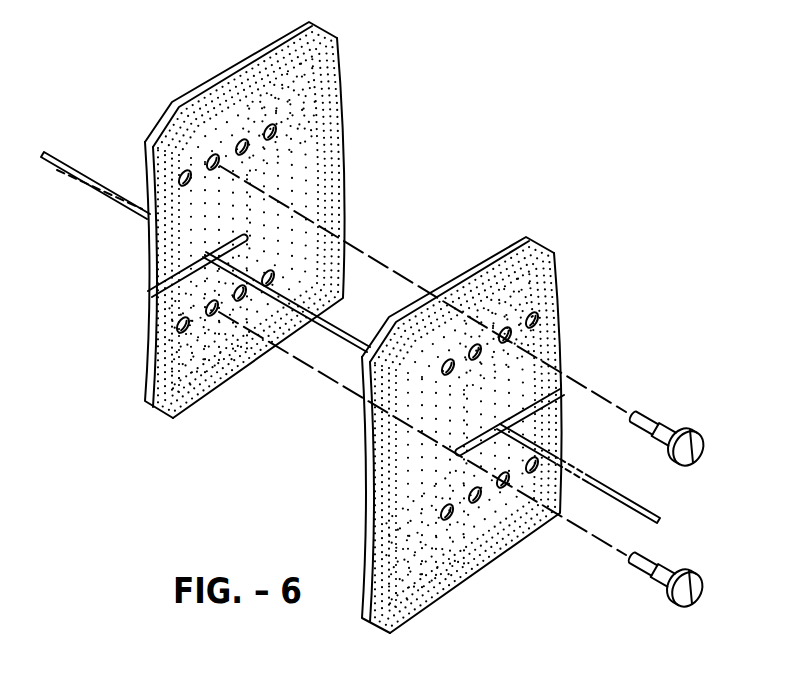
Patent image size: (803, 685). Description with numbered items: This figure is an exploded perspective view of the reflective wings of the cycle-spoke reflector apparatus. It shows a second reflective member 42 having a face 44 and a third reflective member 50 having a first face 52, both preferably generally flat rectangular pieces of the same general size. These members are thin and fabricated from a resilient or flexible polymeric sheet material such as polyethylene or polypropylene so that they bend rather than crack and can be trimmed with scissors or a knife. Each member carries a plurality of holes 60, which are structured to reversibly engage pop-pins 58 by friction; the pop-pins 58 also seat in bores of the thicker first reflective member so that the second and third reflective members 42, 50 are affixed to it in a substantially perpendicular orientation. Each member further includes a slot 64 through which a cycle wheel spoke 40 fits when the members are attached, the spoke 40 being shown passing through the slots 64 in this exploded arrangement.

The cycle wheel spoke 40 is at (55, 150).
The second reflective member 42 is at (468, 455).
The face 44 is at (502, 555).
The third reflective member 50 is at (280, 220).
The first face 52 is at (305, 113).
The pop-pins 58 is at (655, 412).
The holes 60 is at (242, 142).
The slot 64 is at (148, 293).